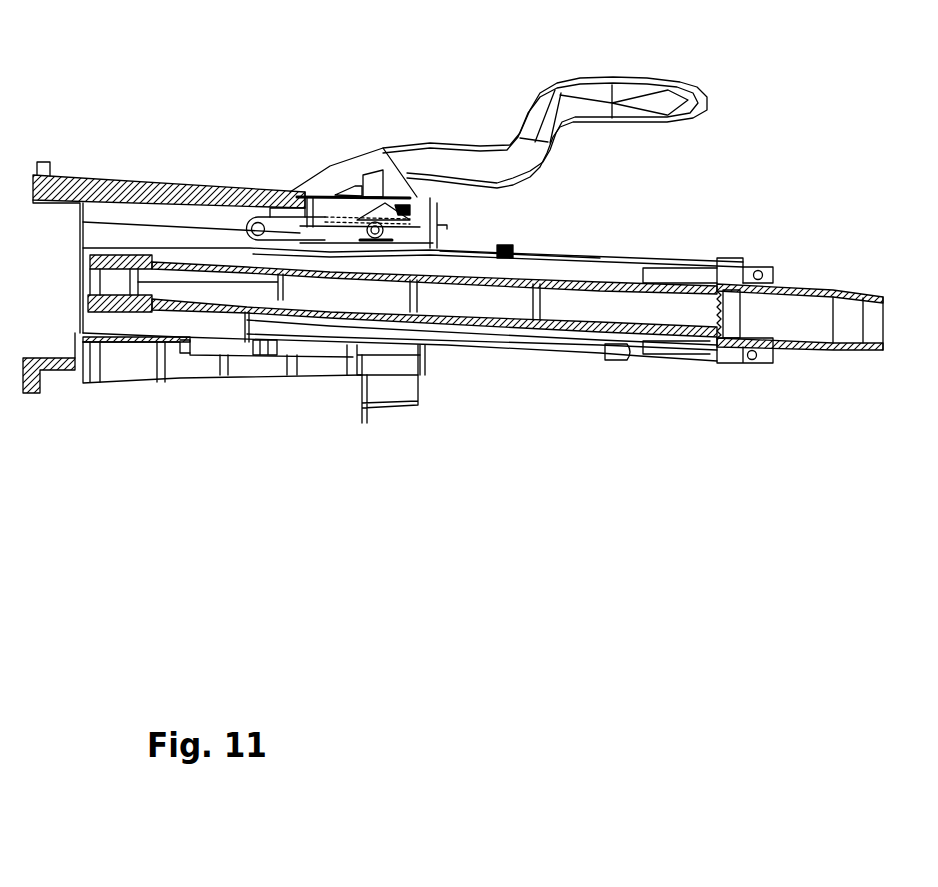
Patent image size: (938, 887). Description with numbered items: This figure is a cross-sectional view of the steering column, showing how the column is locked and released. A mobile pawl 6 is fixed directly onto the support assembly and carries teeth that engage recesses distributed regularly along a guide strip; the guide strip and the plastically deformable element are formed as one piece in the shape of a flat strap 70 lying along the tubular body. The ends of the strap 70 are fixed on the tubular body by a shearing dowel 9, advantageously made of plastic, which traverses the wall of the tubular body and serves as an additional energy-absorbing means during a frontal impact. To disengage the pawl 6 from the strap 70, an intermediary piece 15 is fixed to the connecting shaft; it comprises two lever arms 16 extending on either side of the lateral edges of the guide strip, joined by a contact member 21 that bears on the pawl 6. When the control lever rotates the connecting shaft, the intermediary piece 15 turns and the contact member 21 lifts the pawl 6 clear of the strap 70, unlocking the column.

The strap 70 is at (250, 252).
The mobile pawl 6 is at (325, 207).
The intermediary piece 15 is at (383, 200).
The lever arms 16 is at (400, 234).
The contact member 21 is at (412, 212).
The shearing dowel 9 is at (513, 247).